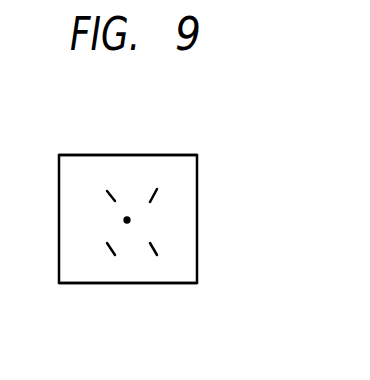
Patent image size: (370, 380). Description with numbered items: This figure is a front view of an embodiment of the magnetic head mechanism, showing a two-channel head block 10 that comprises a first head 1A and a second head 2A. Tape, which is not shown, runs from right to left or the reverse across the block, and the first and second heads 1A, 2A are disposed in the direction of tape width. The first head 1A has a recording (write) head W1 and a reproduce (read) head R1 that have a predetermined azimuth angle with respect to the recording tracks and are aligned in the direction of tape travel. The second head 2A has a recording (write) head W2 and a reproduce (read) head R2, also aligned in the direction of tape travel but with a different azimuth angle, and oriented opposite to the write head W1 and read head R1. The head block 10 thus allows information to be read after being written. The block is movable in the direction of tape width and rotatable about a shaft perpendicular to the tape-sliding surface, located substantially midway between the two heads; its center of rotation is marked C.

The head block 10 is at (212, 227).
The first head 1A is at (132, 155).
The second head 2A is at (125, 283).
The recording (write) head W1 is at (111, 191).
The reproduce (read) head R1 is at (152, 192).
The reproduce (read) head R2 is at (110, 248).
The recording (write) head W2 is at (151, 248).
The center of rotation C is at (127, 220).